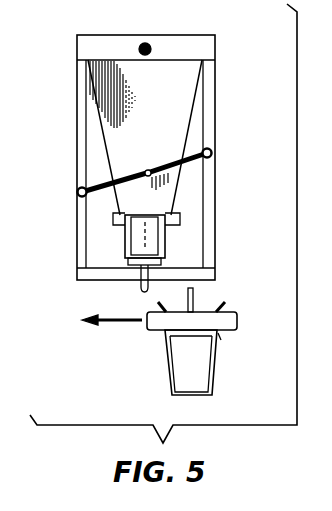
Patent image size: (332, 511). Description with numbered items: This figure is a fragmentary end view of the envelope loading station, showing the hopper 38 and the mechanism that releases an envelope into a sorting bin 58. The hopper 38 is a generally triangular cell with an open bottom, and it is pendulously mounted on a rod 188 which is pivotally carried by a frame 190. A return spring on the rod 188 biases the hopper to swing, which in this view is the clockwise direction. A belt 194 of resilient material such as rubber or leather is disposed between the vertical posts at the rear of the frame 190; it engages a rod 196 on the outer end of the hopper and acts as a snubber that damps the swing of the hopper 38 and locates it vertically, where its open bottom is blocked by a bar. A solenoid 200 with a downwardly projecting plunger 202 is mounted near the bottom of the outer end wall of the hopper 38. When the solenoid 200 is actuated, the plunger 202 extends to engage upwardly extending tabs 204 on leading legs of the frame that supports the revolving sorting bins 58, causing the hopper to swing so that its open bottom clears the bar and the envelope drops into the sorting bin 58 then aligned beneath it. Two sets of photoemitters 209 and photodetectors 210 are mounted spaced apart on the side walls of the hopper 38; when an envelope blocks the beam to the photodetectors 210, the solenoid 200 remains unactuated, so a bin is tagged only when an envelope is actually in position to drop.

The rod 188 is at (148, 40).
The frame 190 is at (222, 82).
The hopper 38 is at (100, 128).
The belt 194 is at (210, 157).
The rod 196 is at (150, 166).
The photoemitters 209 is at (112, 222).
The photodetectors 210 is at (180, 218).
The solenoid 200 is at (158, 243).
The plunger 202 is at (140, 285).
The tabs 204 is at (192, 302).
The sorting bins 58 is at (155, 349).